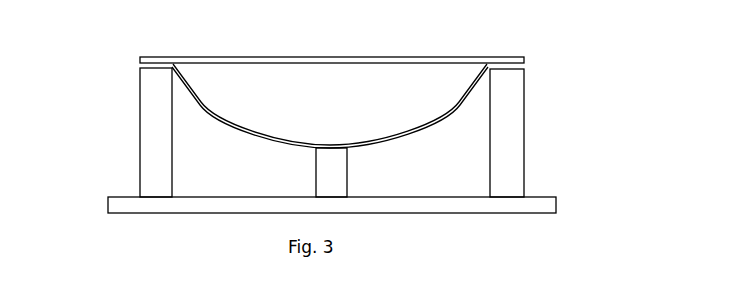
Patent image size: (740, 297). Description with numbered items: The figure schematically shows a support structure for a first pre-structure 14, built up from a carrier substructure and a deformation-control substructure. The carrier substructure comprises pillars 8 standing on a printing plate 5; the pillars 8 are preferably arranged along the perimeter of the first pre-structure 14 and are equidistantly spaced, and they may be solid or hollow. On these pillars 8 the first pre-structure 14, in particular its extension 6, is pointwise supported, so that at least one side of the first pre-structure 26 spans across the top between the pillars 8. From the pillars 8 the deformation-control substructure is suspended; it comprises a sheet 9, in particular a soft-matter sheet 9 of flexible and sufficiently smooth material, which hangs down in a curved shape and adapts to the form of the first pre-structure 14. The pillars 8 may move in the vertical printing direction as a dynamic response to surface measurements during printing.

The printing plate 5 is at (152, 206).
The extension 6 is at (490, 47).
The pillar 8 is at (153, 137).
The sheet 9 is at (200, 102).
The first pre-structure 14 is at (227, 85).
The at least one side of the first pre-structure 26 is at (302, 57).